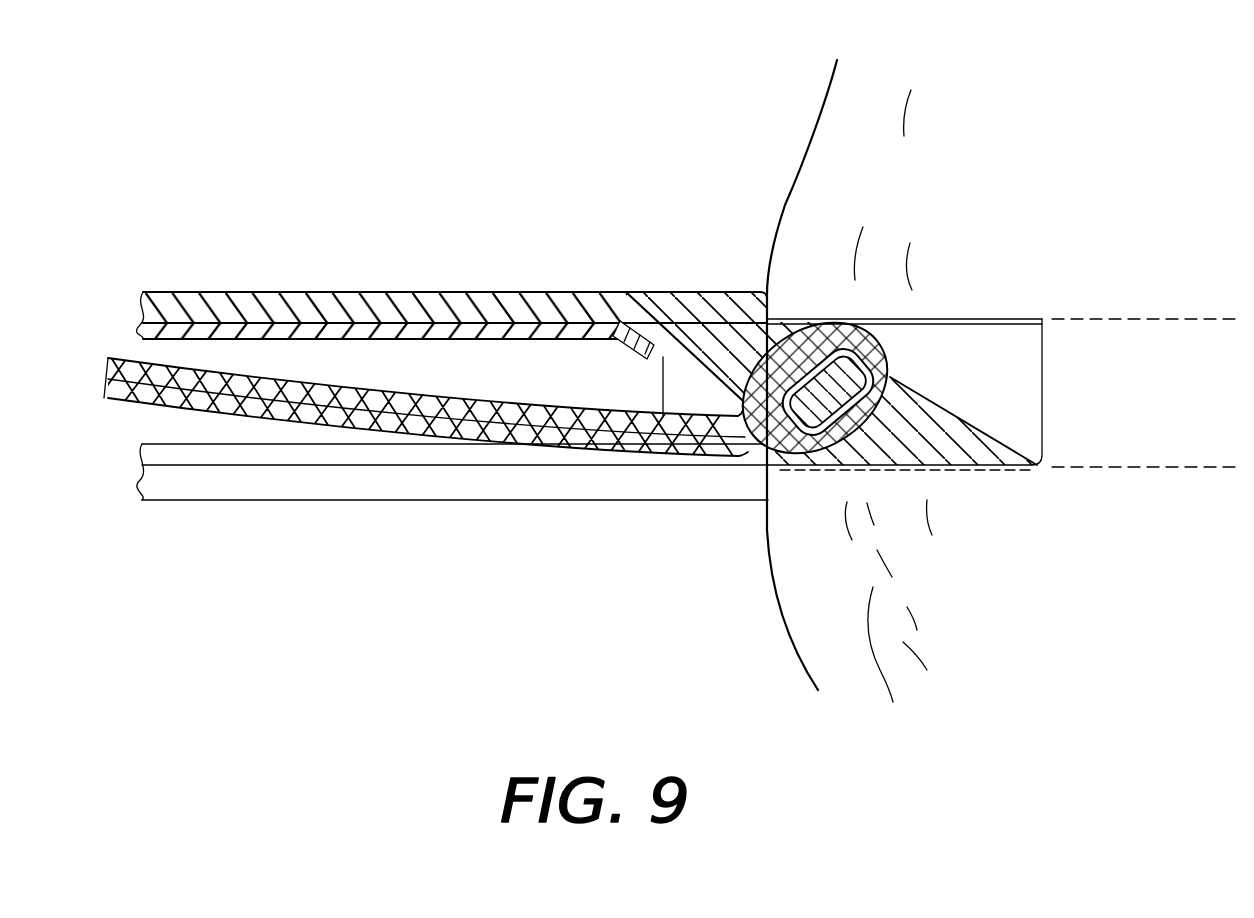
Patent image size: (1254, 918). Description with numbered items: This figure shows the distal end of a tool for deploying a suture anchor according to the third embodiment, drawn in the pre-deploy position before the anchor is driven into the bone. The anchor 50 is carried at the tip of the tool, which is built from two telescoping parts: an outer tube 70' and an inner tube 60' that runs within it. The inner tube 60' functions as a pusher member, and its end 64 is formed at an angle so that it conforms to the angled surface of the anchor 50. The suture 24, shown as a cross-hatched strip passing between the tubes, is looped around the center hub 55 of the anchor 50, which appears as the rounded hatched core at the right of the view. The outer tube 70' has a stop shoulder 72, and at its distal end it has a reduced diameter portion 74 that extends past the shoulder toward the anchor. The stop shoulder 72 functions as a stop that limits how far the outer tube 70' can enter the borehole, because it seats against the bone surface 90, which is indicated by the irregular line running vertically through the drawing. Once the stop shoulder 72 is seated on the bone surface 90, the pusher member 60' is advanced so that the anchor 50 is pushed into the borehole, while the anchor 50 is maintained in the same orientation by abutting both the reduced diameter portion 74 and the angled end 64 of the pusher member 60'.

The suture 24 is at (544, 422).
The anchor 50 is at (937, 452).
The center hub 55 is at (866, 364).
The inner tube 60' is at (455, 272).
The end 64 is at (648, 343).
The outer tube 70' is at (452, 262).
The stop shoulder 72 is at (767, 298).
The reduced diameter portion 74 is at (990, 320).
The bone surface 90 is at (818, 648).